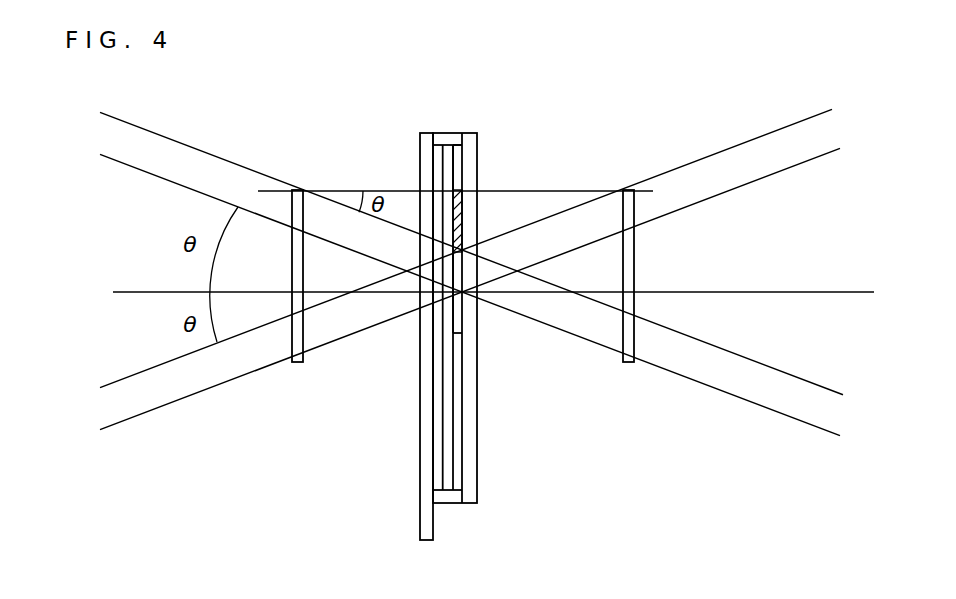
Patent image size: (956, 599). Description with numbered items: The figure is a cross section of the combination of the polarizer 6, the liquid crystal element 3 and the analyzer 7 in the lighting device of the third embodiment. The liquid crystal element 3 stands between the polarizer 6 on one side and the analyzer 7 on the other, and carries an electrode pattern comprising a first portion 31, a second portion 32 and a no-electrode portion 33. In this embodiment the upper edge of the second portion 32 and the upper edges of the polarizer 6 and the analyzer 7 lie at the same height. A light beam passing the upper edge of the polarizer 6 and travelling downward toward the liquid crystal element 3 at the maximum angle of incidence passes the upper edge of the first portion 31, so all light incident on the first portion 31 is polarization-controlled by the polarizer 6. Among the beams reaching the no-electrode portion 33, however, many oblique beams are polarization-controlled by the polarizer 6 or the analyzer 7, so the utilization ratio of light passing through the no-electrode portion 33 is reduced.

The liquid crystal element 3 is at (479, 336).
The first portion 31 is at (458, 313).
The second portion 32 is at (458, 213).
The no-electrode portion 33 is at (458, 160).
The polarizer 6 is at (292, 255).
The analyzer 7 is at (634, 263).